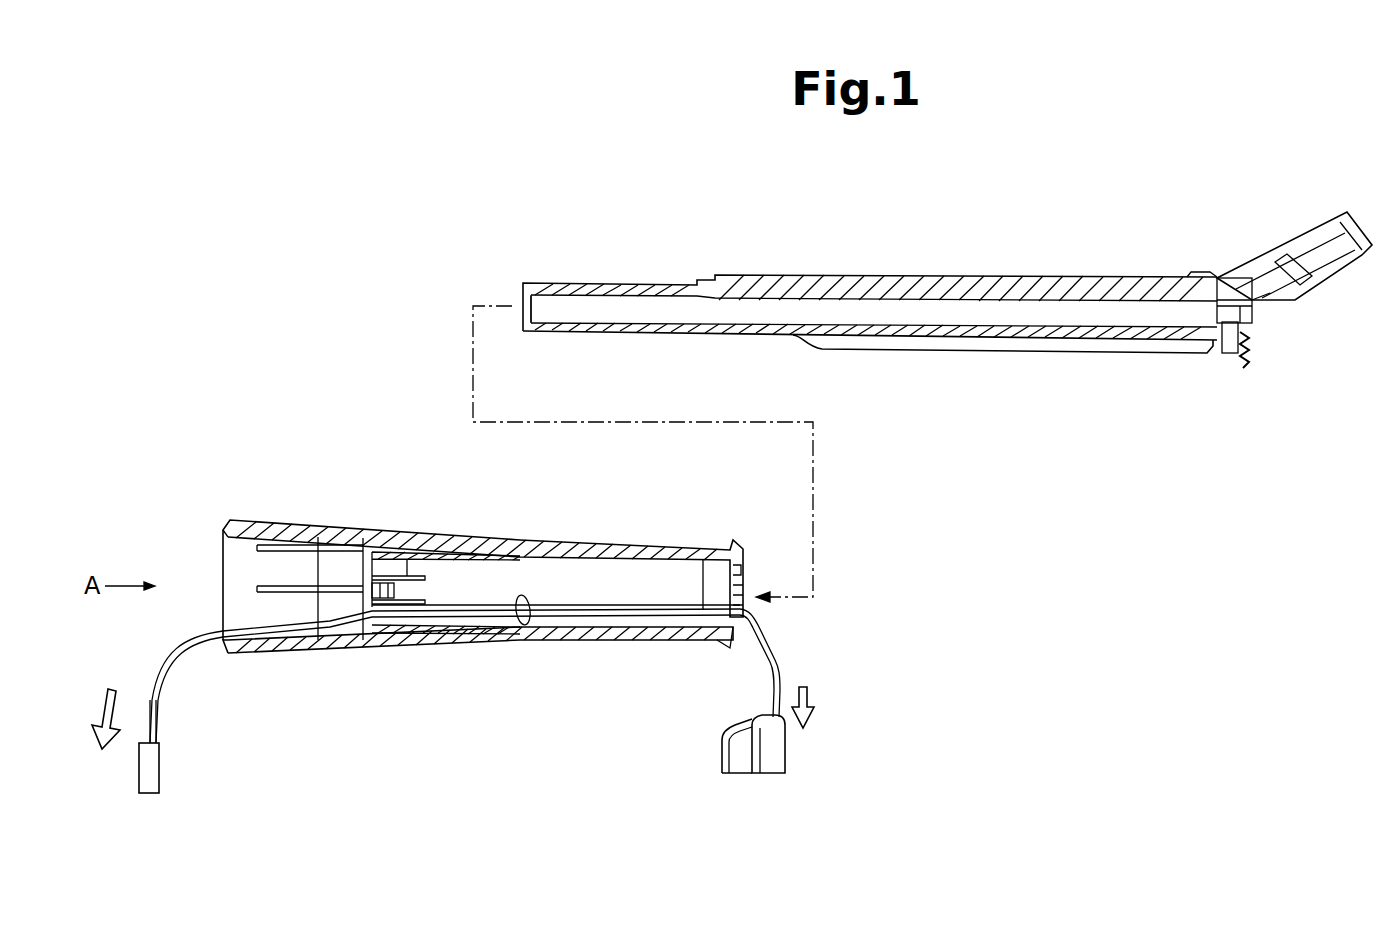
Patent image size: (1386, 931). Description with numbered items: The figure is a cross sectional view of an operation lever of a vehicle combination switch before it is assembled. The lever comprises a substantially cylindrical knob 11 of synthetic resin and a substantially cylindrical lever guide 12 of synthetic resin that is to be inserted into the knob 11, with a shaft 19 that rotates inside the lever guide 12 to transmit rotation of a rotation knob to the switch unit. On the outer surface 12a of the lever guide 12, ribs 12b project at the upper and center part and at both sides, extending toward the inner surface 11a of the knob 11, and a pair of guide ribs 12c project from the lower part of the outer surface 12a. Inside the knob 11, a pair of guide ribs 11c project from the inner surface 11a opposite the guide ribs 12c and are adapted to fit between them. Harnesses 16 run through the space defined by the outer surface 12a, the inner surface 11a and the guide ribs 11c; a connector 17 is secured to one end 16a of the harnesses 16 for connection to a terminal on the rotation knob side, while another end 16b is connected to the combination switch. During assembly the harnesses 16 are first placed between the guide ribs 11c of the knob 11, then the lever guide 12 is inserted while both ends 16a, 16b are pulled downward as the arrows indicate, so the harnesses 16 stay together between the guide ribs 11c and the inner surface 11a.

The knob 11 is at (468, 528).
The inner surface of the knob 11a is at (524, 624).
The guide ribs of the knob 11c is at (600, 607).
The lever guide 12 is at (641, 280).
The outer surface of the lever guide 12a is at (990, 340).
The ribs 12b is at (960, 277).
The guide ribs of the lever guide 12c is at (1107, 355).
The harnesses 16 is at (182, 667).
The end of the harnesses 16a is at (153, 729).
The another end of the harnesses 16b is at (786, 753).
The connector 17 is at (159, 786).
The shaft 19 is at (747, 310).